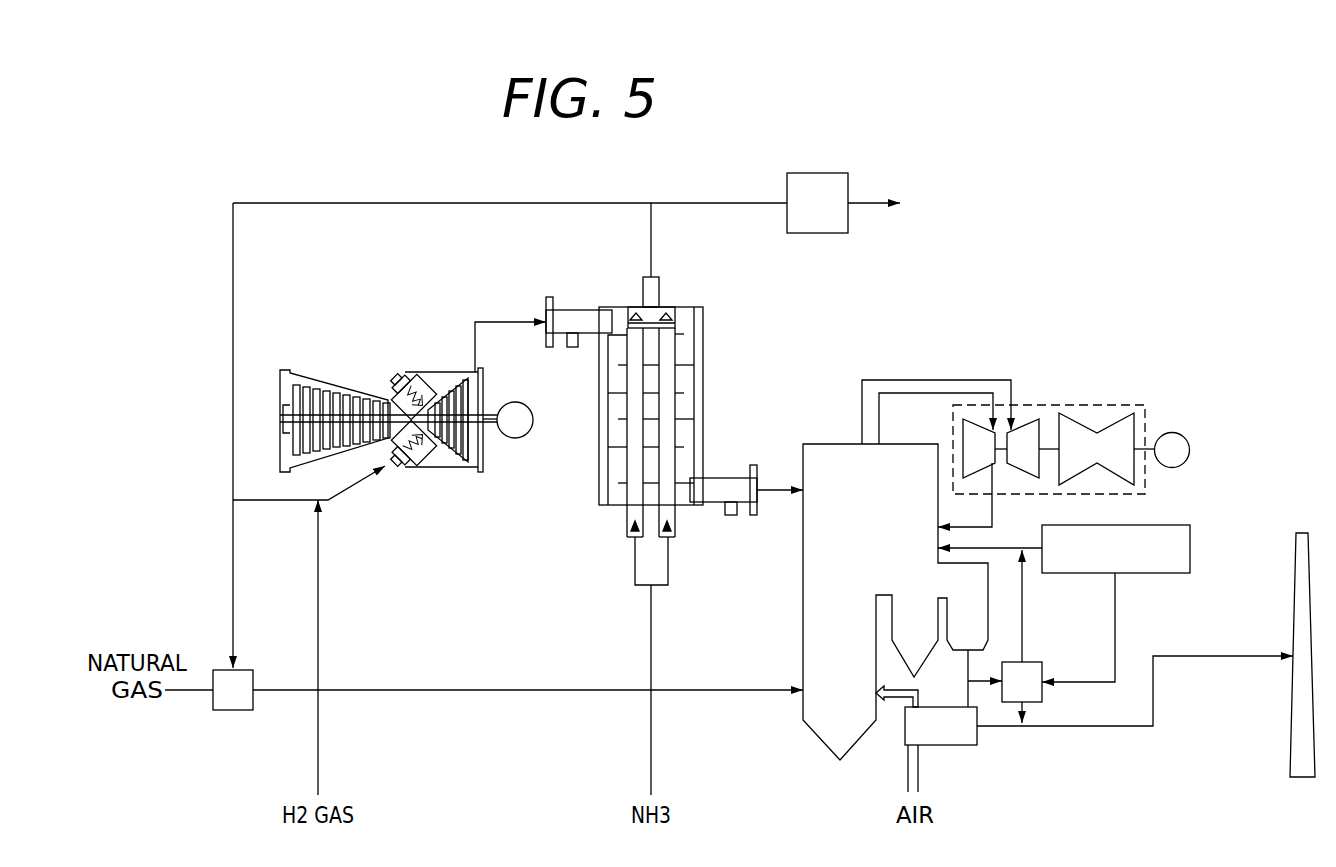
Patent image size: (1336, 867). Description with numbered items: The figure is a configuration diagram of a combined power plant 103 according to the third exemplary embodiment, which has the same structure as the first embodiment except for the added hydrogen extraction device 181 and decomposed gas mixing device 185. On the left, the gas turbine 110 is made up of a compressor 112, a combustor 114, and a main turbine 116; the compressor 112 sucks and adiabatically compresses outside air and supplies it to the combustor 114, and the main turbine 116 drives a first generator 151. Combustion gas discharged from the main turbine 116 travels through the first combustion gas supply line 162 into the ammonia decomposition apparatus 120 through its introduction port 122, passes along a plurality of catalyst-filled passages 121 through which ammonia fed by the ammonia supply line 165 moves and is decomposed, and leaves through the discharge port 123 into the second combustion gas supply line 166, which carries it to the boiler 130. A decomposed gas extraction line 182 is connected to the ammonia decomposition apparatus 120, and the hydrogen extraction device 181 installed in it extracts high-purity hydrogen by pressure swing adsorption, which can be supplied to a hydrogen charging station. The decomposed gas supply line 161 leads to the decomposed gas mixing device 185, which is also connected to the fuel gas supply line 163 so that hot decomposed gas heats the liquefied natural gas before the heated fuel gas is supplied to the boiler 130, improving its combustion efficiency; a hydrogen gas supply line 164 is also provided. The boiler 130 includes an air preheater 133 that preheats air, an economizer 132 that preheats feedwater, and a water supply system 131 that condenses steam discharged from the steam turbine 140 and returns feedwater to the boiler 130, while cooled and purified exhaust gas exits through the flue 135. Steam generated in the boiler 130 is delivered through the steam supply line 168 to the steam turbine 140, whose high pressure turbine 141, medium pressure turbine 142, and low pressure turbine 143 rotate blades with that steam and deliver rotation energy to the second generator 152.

The combined power plant 103 is at (958, 156).
The gas turbine 110 is at (388, 399).
The compressor 112 is at (327, 388).
The combustor 114 is at (420, 382).
The main turbine 116 is at (451, 470).
The ammonia decomposition apparatus 120 is at (696, 431).
The passage 121 is at (670, 376).
The introduction port 122 is at (580, 308).
The discharge port 123 is at (727, 478).
The boiler 130 is at (826, 438).
The water supply system 131 is at (1190, 548).
The economizer 132 is at (1032, 662).
The air preheater 133 is at (970, 745).
The flue 135 is at (1291, 736).
The steam turbine 140 is at (1041, 419).
The high pressure turbine 141 is at (973, 420).
The medium pressure turbine 142 is at (1023, 420).
The low pressure turbine 143 is at (1107, 415).
The first generator 151 is at (515, 403).
The second generator 152 is at (1170, 432).
The decomposed gas supply line 161 is at (233, 570).
The first combustion gas supply line 162 is at (497, 322).
The fuel gas supply line 163 is at (498, 692).
The hydrogen gas supply line 164 is at (320, 742).
The ammonia supply line 165 is at (653, 745).
The second combustion gas supply line 166 is at (781, 495).
The steam supply line 168 is at (894, 380).
The hydrogen extraction device 181 is at (835, 233).
The decomposed gas extraction line 182 is at (718, 203).
The decomposed gas mixing device 185 is at (234, 712).